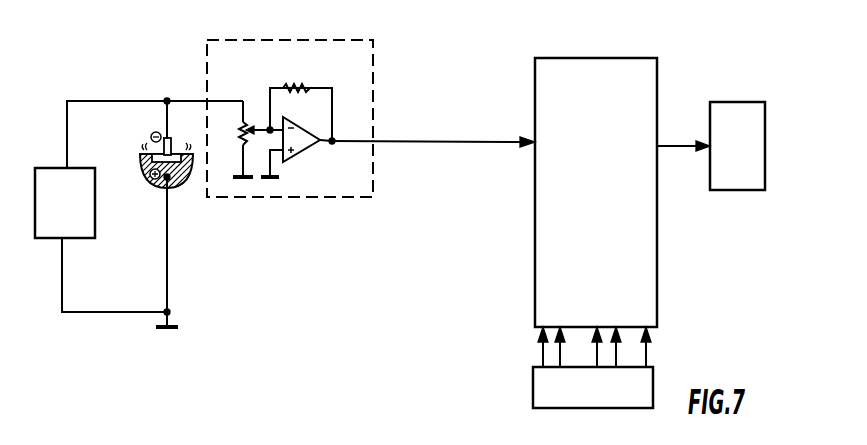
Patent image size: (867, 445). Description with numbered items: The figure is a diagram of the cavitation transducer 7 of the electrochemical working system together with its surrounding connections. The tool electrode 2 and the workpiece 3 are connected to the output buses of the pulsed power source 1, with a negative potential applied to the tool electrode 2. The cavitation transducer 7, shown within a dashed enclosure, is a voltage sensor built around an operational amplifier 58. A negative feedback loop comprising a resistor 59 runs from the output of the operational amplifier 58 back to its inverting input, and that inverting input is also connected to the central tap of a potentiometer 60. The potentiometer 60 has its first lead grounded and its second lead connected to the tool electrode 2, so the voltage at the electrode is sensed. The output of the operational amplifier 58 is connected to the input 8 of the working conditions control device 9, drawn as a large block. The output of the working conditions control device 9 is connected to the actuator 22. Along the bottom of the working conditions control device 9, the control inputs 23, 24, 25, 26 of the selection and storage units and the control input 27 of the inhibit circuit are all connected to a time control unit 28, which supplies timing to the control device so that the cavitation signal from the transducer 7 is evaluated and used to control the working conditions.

The pulsed power source 1 is at (65, 203).
The tool electrode 2 is at (172, 150).
The workpiece 3 is at (178, 180).
The cavitation transducer 7 is at (378, 77).
The input of working conditions control device 8 is at (533, 146).
The working conditions control device 9 is at (535, 242).
The actuator 22 is at (711, 146).
The control input 23 is at (538, 334).
The control input 24 is at (559, 334).
The control input 25 is at (597, 333).
The control input 26 is at (616, 333).
The control input of inhibit circuit 27 is at (648, 334).
The time control unit 28 is at (593, 387).
The operational amplifier 58 is at (308, 146).
The resistor 59 is at (300, 86).
The potentiometer 60 is at (240, 128).